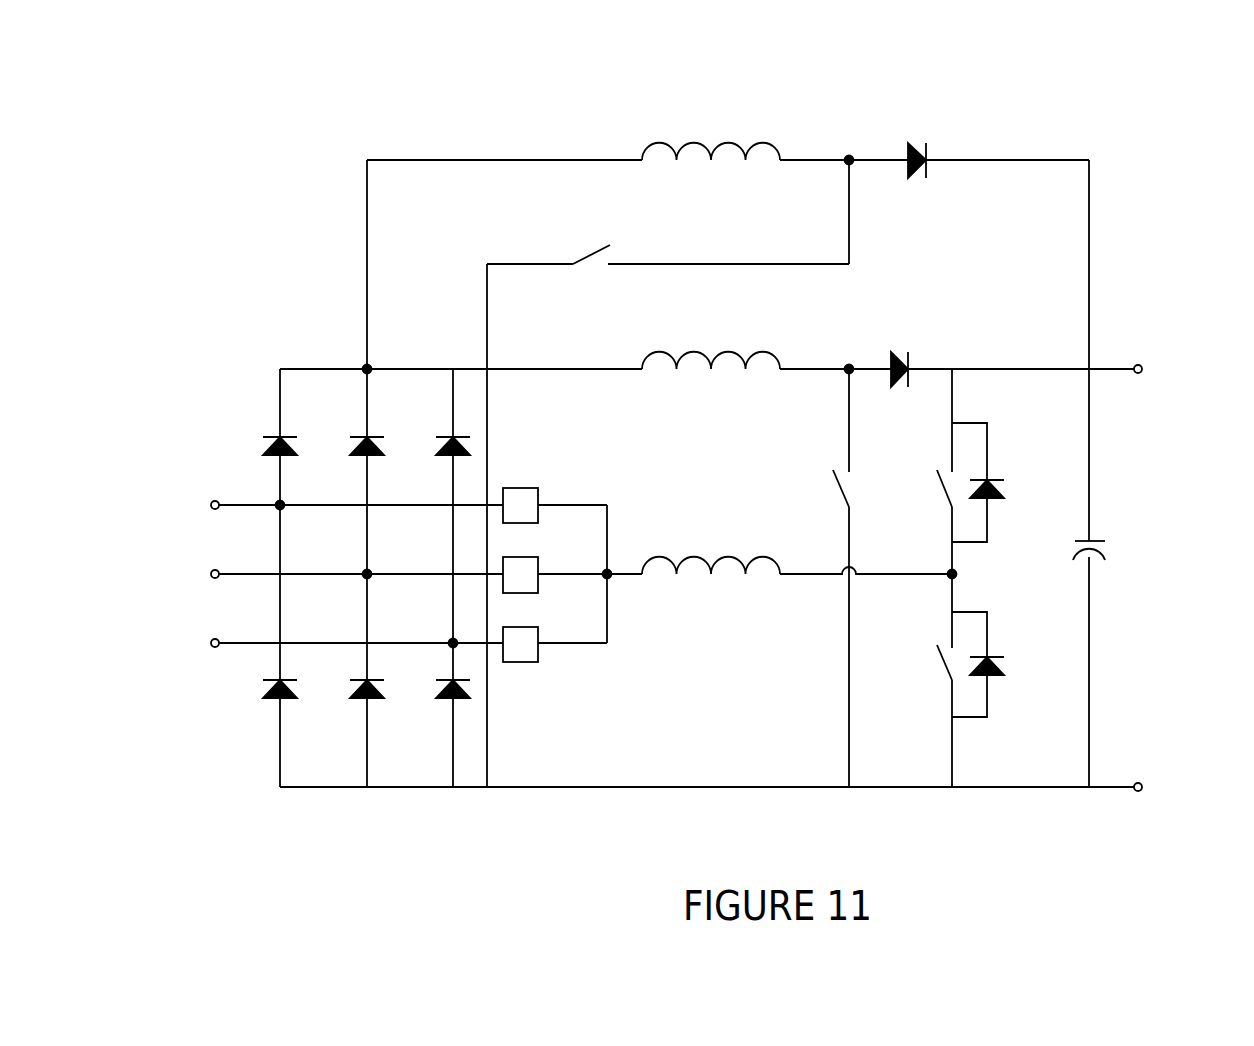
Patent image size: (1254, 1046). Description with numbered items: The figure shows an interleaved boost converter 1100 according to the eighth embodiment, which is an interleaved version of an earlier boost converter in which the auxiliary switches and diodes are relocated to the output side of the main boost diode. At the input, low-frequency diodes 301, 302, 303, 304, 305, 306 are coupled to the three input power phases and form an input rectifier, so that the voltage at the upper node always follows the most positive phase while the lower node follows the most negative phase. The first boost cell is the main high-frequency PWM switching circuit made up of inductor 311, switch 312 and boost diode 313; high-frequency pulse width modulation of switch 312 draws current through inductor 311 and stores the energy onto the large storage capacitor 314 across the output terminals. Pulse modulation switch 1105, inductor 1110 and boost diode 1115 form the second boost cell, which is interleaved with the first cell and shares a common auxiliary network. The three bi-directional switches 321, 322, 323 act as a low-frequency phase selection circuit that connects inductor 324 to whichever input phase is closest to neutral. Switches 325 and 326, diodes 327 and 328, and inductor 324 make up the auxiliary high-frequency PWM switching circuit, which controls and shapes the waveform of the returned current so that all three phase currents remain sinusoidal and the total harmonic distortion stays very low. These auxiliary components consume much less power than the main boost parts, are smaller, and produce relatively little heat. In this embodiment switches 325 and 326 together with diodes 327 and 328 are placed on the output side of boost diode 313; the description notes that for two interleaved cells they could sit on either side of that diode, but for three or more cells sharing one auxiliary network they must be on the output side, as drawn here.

The interleaved boost converter 1100 is at (333, 55).
The inductor 1110 is at (693, 142).
The pulse modulation switch 1105 is at (607, 243).
The boost diode 1115 is at (908, 181).
The inductor 311 is at (760, 351).
The boost diode 313 is at (892, 350).
The switch 312 is at (827, 474).
The storage capacitor 314 is at (1108, 543).
The low-frequency diode 301 is at (300, 457).
The low-frequency diode 302 is at (387, 457).
The low-frequency diode 303 is at (438, 435).
The low-frequency diode 304 is at (300, 701).
The low-frequency diode 305 is at (387, 701).
The low-frequency diode 306 is at (436, 679).
The bi-directional switch 321 is at (542, 487).
The bi-directional switch 322 is at (542, 556).
The bi-directional switch 323 is at (542, 626).
The inductor 324 is at (693, 556).
The switch 325 is at (930, 474).
The switch 326 is at (930, 647).
The diode 327 is at (1005, 477).
The diode 328 is at (1005, 654).